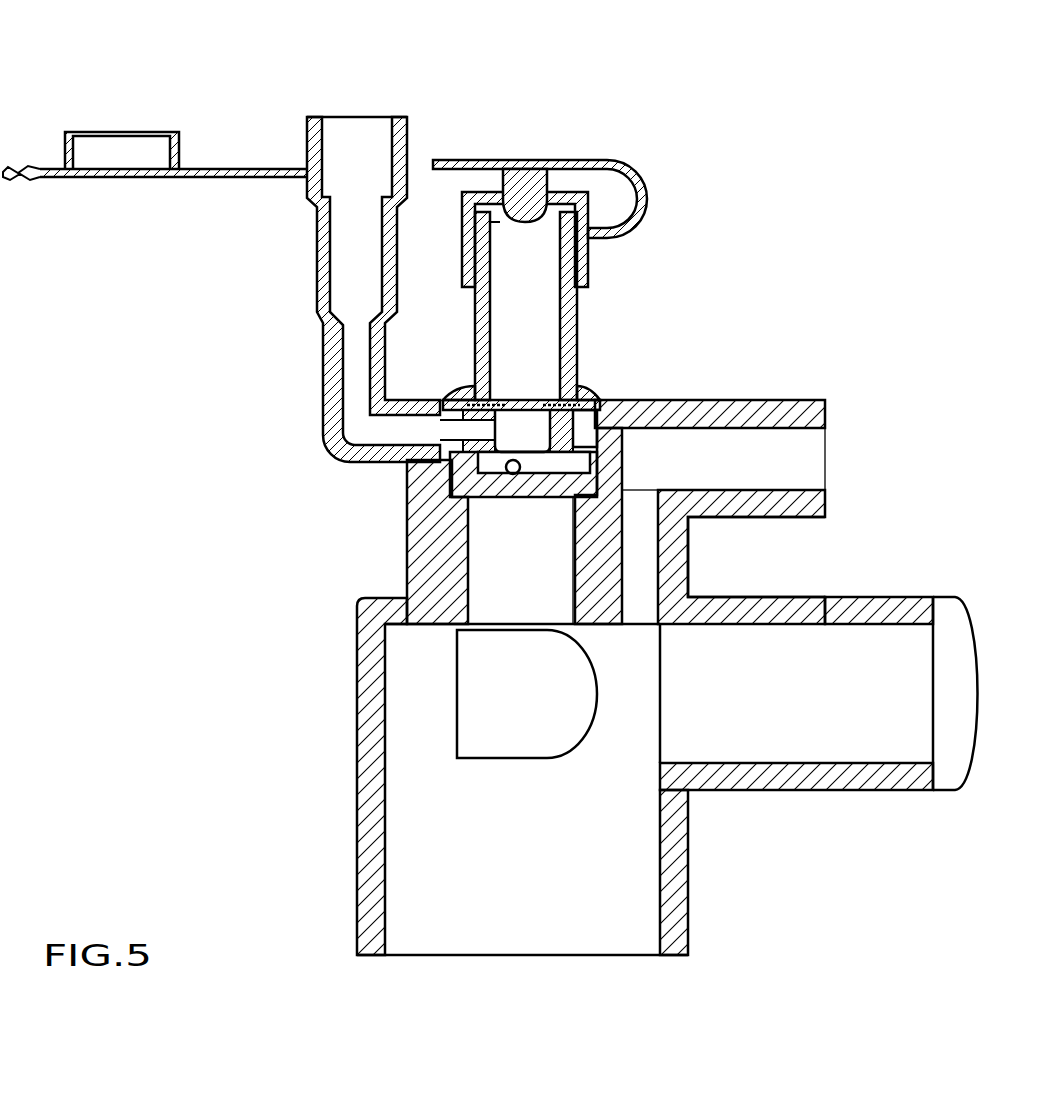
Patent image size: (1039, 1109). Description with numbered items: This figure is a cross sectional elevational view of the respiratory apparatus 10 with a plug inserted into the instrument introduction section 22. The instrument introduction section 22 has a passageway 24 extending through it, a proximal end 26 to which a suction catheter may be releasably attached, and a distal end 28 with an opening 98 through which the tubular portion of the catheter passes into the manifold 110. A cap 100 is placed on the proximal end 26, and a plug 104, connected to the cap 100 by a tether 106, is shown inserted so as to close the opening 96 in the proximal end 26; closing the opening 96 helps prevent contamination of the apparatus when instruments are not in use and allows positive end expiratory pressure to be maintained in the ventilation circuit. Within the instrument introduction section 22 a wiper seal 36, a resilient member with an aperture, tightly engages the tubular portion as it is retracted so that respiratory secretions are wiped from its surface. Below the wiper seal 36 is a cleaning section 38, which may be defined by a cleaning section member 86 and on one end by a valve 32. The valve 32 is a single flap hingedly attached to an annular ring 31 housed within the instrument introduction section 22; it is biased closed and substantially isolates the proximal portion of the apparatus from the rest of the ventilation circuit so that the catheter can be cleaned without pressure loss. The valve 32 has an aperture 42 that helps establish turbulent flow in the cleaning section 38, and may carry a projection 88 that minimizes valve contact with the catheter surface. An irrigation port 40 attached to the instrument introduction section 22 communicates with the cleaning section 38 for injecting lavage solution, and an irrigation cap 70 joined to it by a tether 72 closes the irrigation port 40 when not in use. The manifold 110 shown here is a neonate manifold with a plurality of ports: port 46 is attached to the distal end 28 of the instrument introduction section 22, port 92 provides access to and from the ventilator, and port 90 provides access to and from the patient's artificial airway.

The respiratory apparatus 10 is at (870, 273).
The instrument introduction section 22 is at (592, 395).
The passageway 24 is at (528, 312).
The proximal end 26 is at (580, 298).
The distal end 28 is at (462, 478).
The annular ring 31 is at (592, 477).
The valve 32 is at (550, 473).
The wiper seal 36 is at (488, 385).
The cleaning section 38 is at (520, 423).
The irrigation port 40 is at (320, 270).
The aperture 42 is at (510, 475).
The port 46 is at (415, 537).
The irrigation cap 70 is at (118, 176).
The tether 72 is at (238, 169).
The cleaning section member 86 is at (570, 423).
The projection 88 is at (510, 483).
The port 90 is at (360, 885).
The port 92 is at (893, 782).
The opening 96 is at (500, 217).
The opening 98 is at (483, 503).
The cap 100 is at (592, 262).
The plug 104 is at (527, 202).
The tether 106 is at (605, 165).
The manifold 110 is at (678, 808).